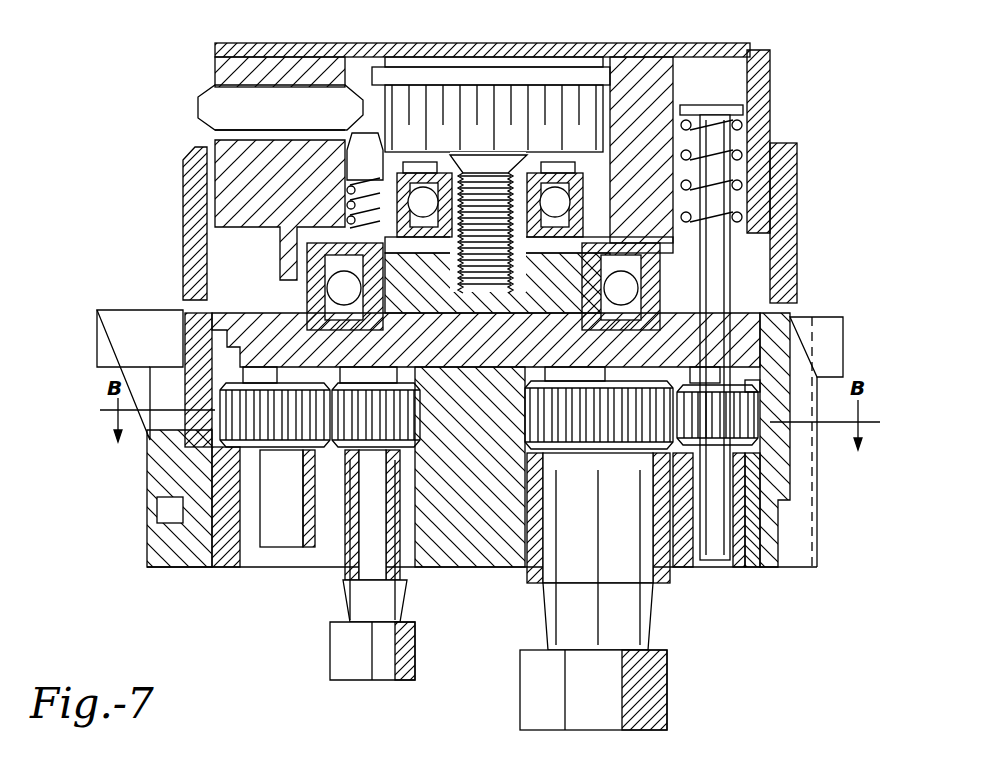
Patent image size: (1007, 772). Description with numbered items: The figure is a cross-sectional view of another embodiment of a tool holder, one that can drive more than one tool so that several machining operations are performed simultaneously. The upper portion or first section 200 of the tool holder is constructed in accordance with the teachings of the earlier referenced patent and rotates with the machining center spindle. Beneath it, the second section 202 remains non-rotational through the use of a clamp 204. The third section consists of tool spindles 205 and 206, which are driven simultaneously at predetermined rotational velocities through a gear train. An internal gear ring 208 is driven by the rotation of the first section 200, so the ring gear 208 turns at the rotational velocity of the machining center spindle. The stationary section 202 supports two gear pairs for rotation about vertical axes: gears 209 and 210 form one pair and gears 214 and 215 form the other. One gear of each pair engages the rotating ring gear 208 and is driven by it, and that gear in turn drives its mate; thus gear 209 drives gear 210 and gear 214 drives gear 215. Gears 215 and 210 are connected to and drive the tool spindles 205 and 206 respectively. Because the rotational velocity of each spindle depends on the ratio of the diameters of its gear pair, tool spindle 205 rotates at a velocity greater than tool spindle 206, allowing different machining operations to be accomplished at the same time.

The first section 200 is at (655, 75).
The second section 202 is at (805, 525).
The clamp 204 is at (120, 318).
The tool spindle 205 is at (410, 608).
The tool spindle 206 is at (640, 628).
The internal gear ring 208 is at (757, 387).
The gear 209 is at (738, 427).
The gear 210 is at (570, 392).
The gear 214 is at (240, 412).
The gear 215 is at (403, 380).